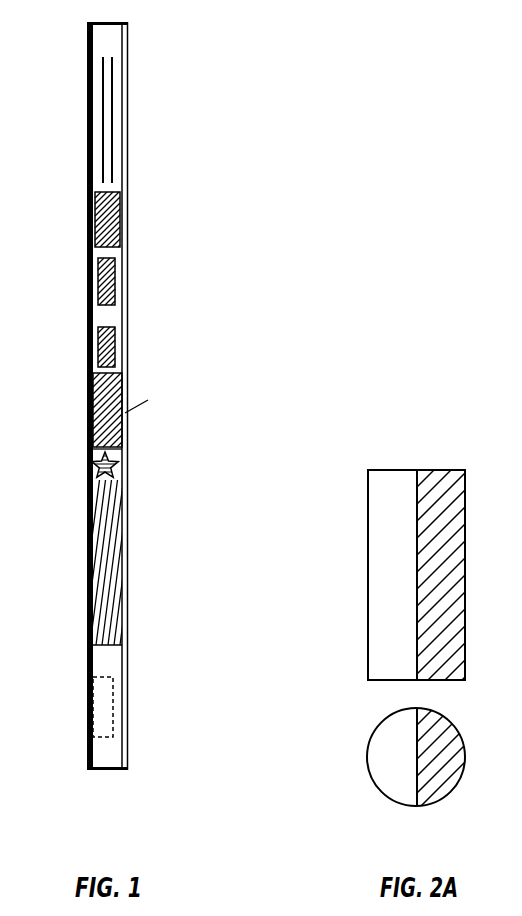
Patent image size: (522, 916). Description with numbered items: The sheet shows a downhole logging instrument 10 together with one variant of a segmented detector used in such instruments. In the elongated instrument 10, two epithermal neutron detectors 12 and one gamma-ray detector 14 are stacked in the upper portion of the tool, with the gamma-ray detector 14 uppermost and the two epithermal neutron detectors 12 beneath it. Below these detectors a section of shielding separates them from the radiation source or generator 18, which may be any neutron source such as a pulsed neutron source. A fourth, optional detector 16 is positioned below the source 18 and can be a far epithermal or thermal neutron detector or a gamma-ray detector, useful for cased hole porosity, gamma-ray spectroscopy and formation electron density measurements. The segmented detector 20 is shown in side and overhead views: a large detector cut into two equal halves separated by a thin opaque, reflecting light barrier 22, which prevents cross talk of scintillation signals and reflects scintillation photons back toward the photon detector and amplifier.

In FIG. 1, the instrument 10 is at (191, 141).
In FIG. 1, the epithermal neutron detector 12 is at (98, 282).
In FIG. 1, the gamma-ray detector 14 is at (95, 222).
In FIG. 1, the optional detector 16 is at (93, 713).
In FIG. 1, the radiation source 18 is at (92, 466).
In FIG. 2A, the segmented detector 20 is at (411, 449).
In FIG. 2A, the light barrier 22 is at (417, 588).